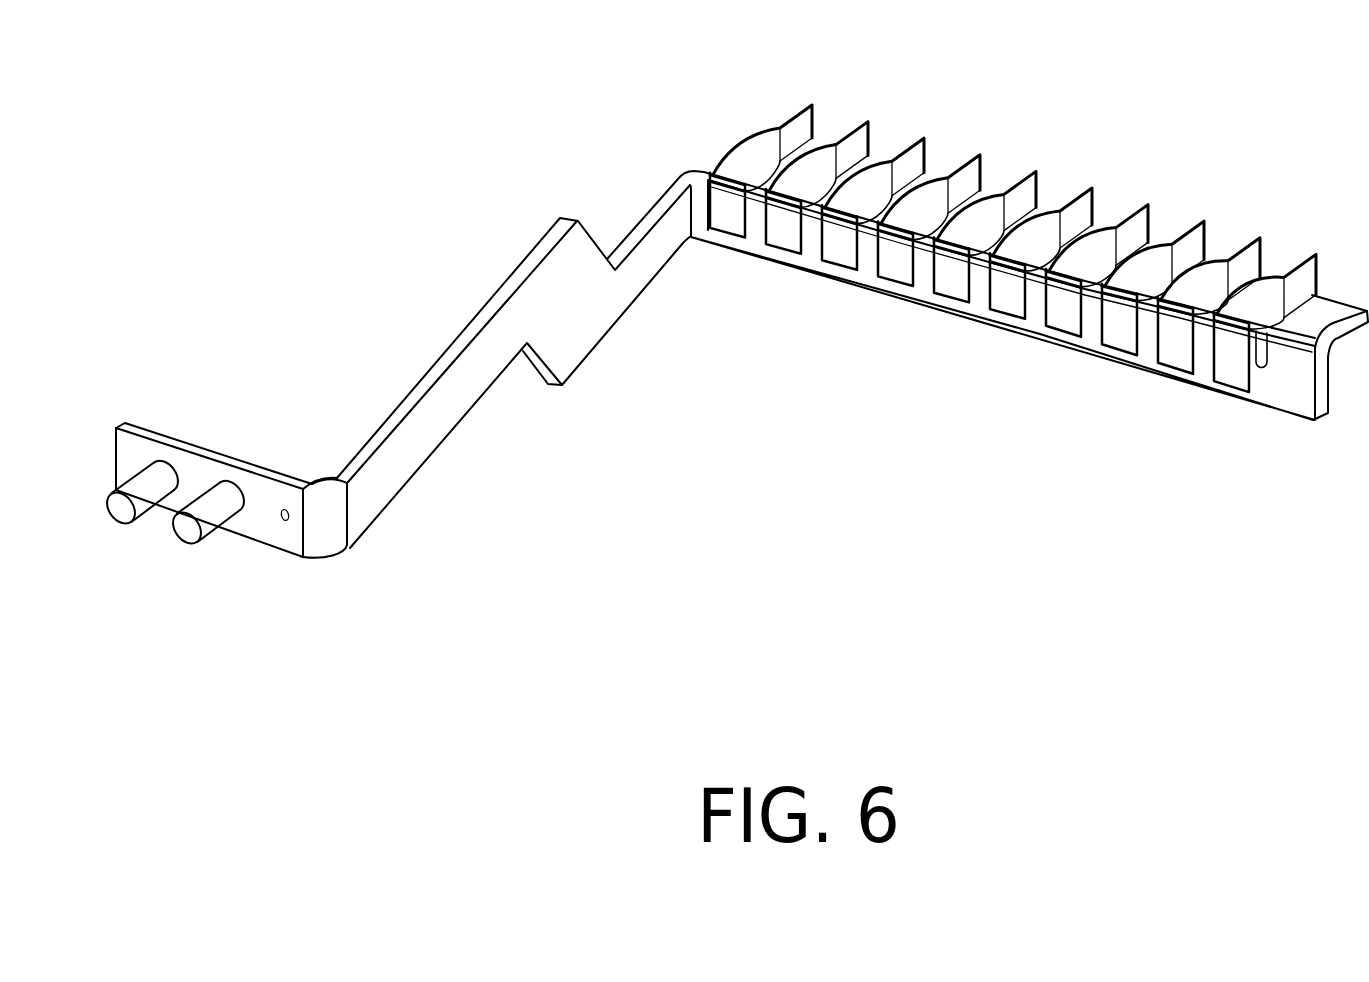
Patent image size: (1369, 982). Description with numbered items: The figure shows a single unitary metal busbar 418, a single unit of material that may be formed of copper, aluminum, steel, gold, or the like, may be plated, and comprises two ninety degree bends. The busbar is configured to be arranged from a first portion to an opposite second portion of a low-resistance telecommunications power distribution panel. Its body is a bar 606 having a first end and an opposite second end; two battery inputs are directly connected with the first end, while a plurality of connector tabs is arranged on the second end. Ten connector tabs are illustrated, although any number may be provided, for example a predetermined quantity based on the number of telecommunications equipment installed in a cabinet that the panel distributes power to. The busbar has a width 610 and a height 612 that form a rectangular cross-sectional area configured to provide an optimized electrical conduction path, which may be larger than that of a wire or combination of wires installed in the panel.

The single unitary metal busbar 418 is at (198, 95).
The bar 606 is at (473, 337).
The width 610 is at (332, 428).
The height 612 is at (325, 450).